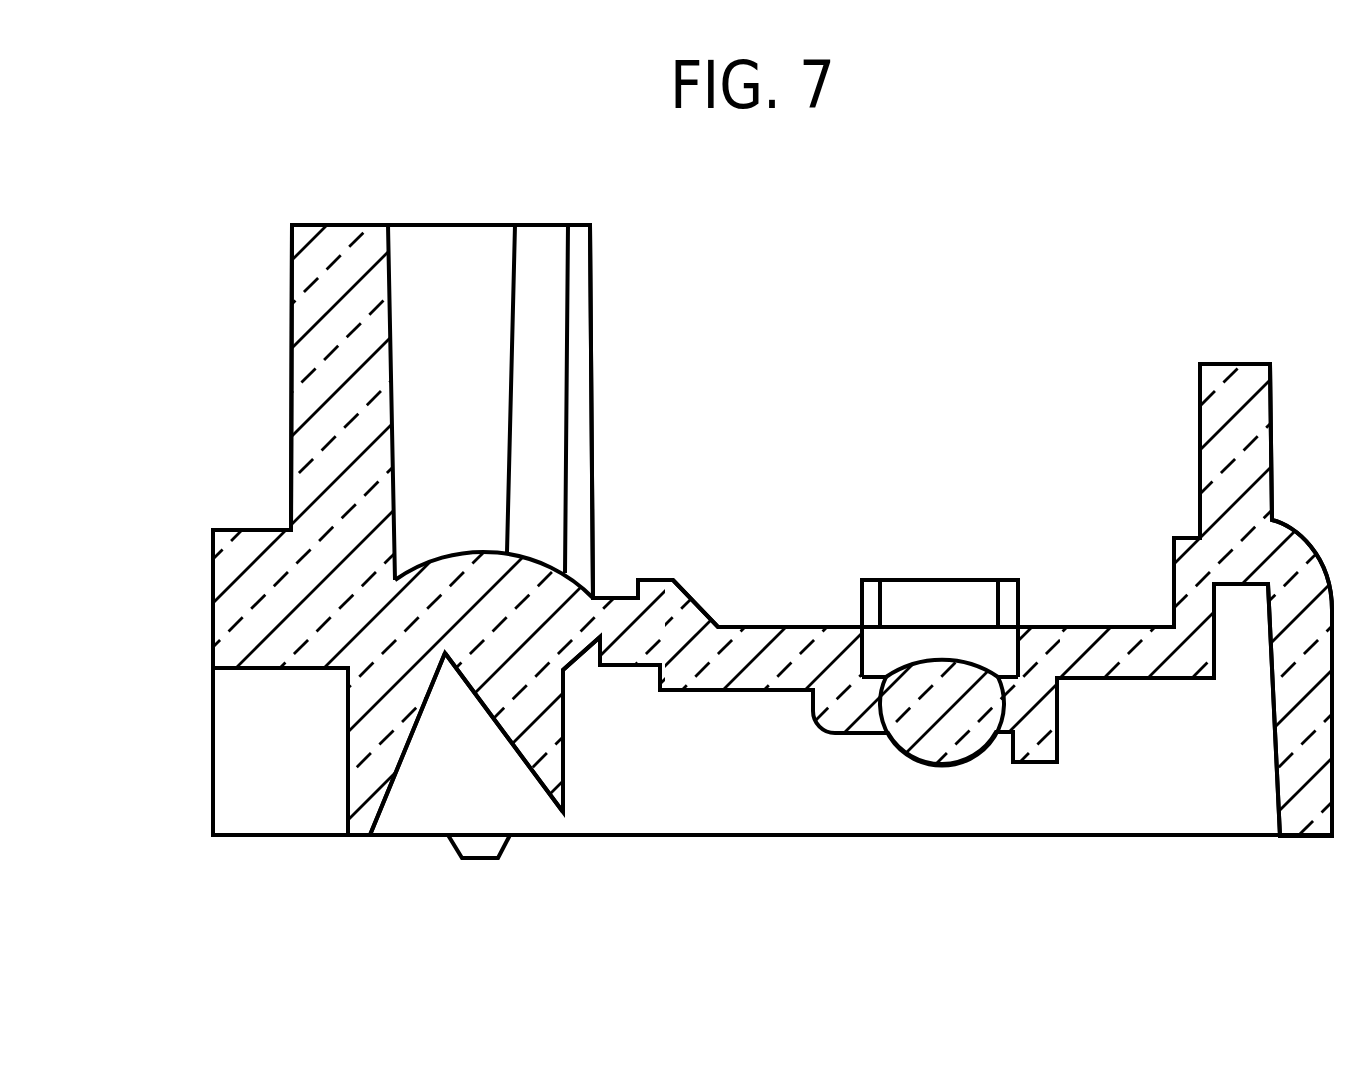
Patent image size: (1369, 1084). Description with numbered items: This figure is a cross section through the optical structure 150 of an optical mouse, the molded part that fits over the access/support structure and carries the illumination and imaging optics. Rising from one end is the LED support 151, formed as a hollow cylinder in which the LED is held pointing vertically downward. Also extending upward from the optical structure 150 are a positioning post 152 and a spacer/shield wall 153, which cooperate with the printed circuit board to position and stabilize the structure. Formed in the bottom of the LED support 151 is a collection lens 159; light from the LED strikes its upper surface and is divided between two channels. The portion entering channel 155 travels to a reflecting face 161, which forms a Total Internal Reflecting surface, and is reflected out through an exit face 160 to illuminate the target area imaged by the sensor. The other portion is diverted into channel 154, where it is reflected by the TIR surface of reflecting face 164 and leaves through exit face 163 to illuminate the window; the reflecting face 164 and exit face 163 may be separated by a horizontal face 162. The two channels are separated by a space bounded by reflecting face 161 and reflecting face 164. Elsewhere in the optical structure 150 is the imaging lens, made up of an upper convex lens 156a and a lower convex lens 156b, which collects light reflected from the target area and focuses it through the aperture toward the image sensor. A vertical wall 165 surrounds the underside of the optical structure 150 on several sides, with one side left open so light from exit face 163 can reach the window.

The optical structure 150 is at (172, 622).
The LED support 151 is at (291, 323).
The positioning post 152 is at (1200, 420).
The spacer/shield wall 153 is at (1019, 597).
The channel 154 is at (360, 727).
The channel 155 is at (558, 728).
The upper convex lens 156a is at (928, 668).
The lower convex lens 156b is at (933, 768).
The collection lens 159 is at (540, 560).
The exit face 160 is at (563, 760).
The reflecting face 161 is at (522, 748).
The horizontal face 162 is at (358, 837).
The exit face 163 is at (360, 762).
The reflecting face 164 is at (394, 787).
The vertical wall 165 is at (764, 800).